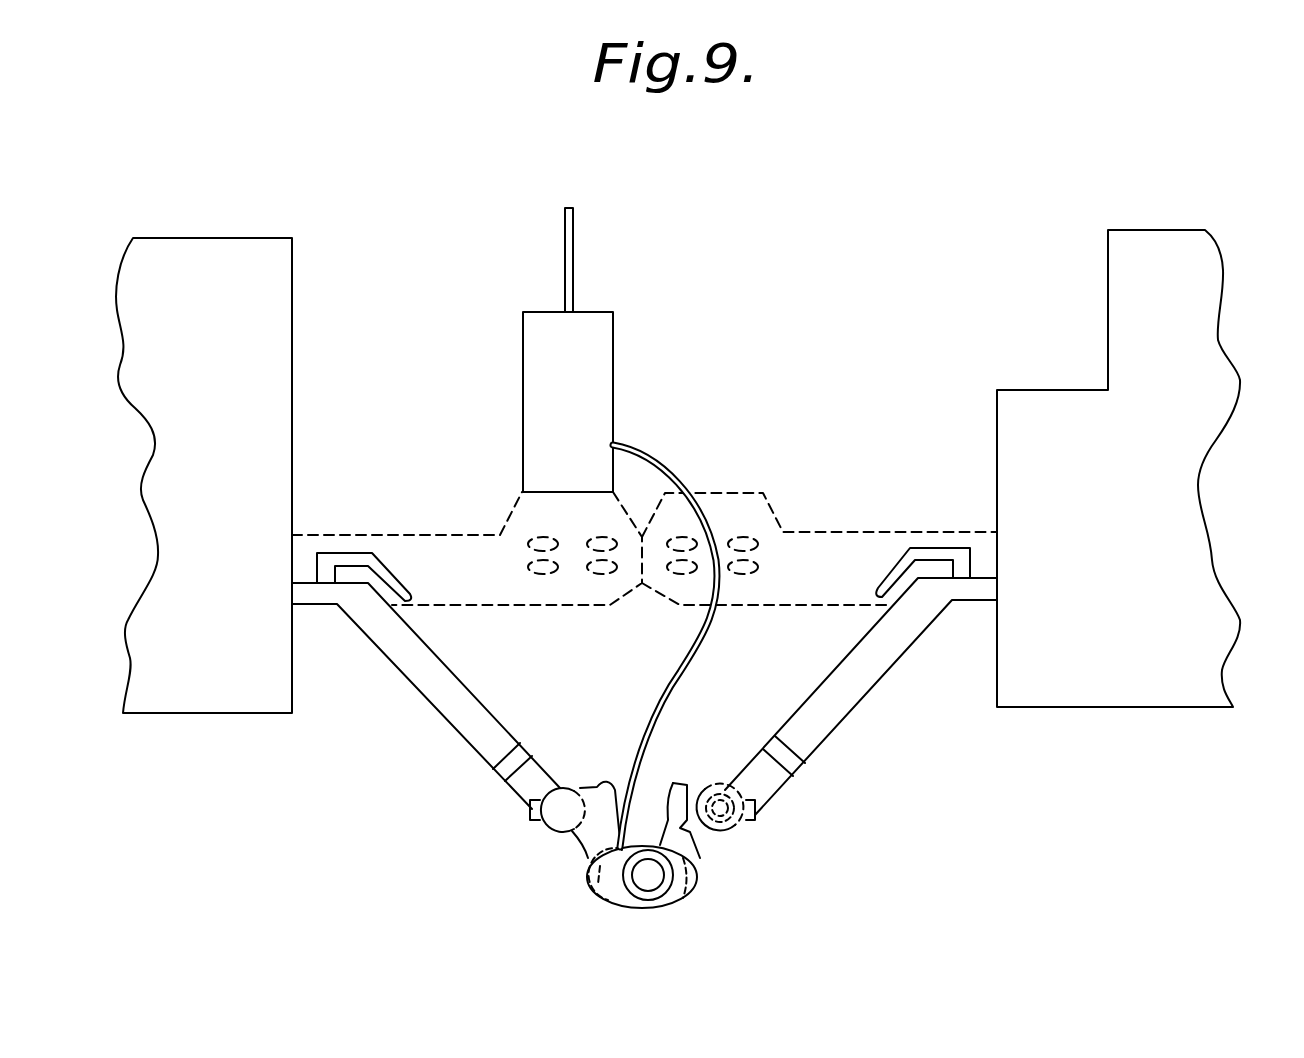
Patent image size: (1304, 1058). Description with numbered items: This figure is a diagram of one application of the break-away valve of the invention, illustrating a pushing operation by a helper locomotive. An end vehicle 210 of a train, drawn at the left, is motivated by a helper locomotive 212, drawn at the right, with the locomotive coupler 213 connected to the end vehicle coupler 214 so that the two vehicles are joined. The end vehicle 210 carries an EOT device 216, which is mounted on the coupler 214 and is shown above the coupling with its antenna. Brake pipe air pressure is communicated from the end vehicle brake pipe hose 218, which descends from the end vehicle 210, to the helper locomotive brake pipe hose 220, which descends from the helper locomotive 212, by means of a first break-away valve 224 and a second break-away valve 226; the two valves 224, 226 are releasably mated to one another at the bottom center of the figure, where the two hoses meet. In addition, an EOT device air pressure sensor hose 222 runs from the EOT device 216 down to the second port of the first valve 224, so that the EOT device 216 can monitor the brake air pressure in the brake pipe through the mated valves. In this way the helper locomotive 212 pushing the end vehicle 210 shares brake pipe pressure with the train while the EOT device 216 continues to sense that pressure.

The end vehicle 210 is at (292, 280).
The helper locomotive 212 is at (1108, 260).
The locomotive coupler 213 is at (828, 527).
The end vehicle coupler 214 is at (430, 535).
The EOT device 216 is at (608, 372).
The end vehicle brake pipe hose 218 is at (432, 700).
The helper locomotive brake pipe hose 220 is at (851, 690).
The EOT device air pressure sensor hose 222 is at (663, 463).
The first break-away valve 224 is at (583, 856).
The second break-away valve 226 is at (700, 858).